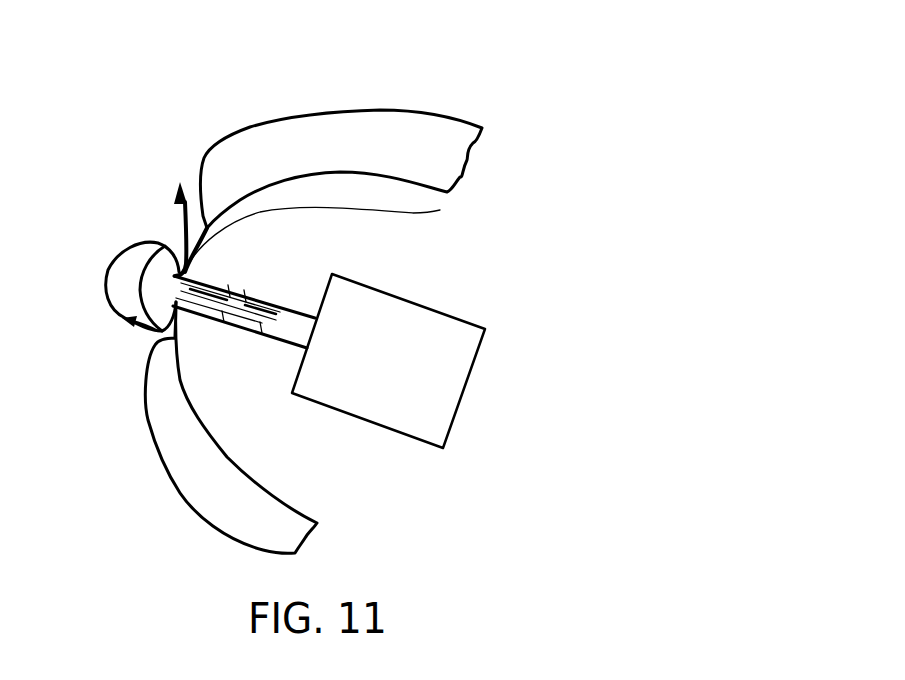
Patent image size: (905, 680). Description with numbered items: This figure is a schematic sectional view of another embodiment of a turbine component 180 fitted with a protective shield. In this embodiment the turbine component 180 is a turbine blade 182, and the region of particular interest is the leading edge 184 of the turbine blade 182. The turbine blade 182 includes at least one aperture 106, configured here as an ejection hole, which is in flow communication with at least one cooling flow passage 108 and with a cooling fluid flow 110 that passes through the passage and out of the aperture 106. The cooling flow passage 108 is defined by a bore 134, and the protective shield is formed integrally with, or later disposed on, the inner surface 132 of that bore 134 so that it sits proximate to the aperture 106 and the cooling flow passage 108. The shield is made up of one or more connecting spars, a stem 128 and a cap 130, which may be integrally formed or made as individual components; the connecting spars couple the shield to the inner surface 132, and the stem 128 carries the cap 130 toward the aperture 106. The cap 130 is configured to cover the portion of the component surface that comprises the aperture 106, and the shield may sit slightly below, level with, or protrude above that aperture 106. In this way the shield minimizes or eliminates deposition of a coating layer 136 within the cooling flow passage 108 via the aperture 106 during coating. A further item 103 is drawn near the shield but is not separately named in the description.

The turbine component 180 is at (204, 62).
The turbine blade 182 is at (369, 173).
The bore 134 is at (298, 338).
The cap 130 is at (150, 268).
The coating layer 136 is at (124, 290).
The leading edge 184 is at (150, 334).
The cooling fluid flow 110 is at (179, 206).
The flow direction arrow 103 is at (210, 240).
The aperture 106 is at (440, 210).
The stem 128 is at (218, 312).
The cooling flow passage 108 is at (258, 328).
The inner surface 132 is at (292, 318).